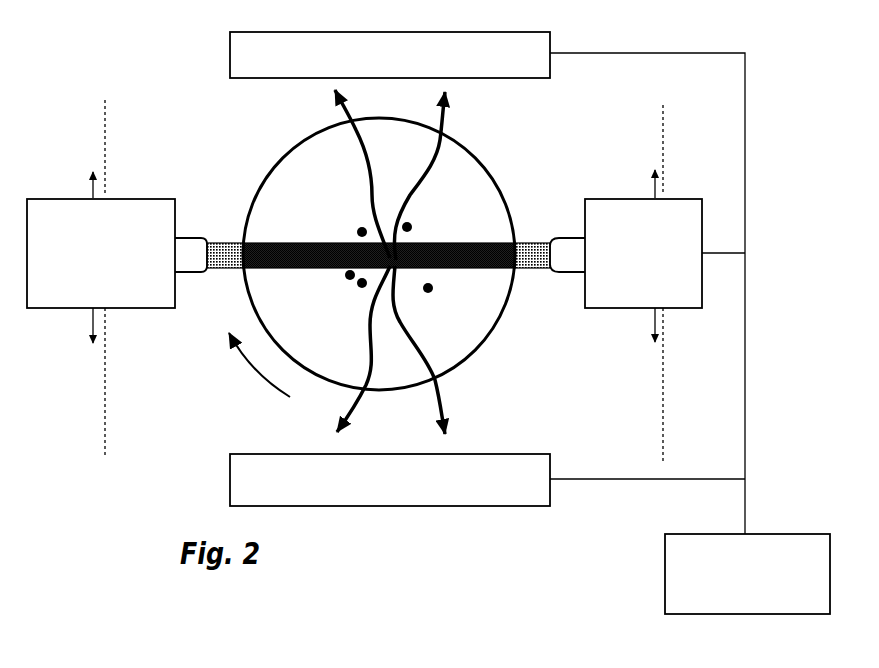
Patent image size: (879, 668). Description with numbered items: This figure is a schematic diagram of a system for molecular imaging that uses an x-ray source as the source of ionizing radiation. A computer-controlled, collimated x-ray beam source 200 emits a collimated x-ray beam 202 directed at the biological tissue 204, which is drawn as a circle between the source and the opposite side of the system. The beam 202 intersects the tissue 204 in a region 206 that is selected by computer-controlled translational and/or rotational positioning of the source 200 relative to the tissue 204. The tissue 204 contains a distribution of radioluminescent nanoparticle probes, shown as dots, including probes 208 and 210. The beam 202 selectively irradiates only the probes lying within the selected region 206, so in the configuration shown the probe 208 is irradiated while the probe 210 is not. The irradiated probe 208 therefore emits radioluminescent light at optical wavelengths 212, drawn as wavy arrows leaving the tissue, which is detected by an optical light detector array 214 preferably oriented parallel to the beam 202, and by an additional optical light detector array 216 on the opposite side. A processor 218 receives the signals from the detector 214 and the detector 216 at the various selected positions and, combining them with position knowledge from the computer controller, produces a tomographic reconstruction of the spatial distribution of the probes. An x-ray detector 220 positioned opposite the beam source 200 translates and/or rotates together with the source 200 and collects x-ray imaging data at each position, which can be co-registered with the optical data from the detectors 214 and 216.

The x-ray beam source 200 is at (117, 279).
The collimated x-ray beam 202 is at (231, 242).
The biological tissue 204 is at (482, 165).
The region 206 is at (494, 243).
The radioluminescent nanoparticle probe 208 is at (417, 251).
The radioluminescent nanoparticle probe 210 is at (356, 227).
The radioluminescent light at optical wavelengths 212 is at (443, 402).
The optical light detector array 214 is at (487, 480).
The additional optical light detector array 216 is at (487, 283).
The processor 218 is at (747, 574).
The x-ray detector 220 is at (665, 284).